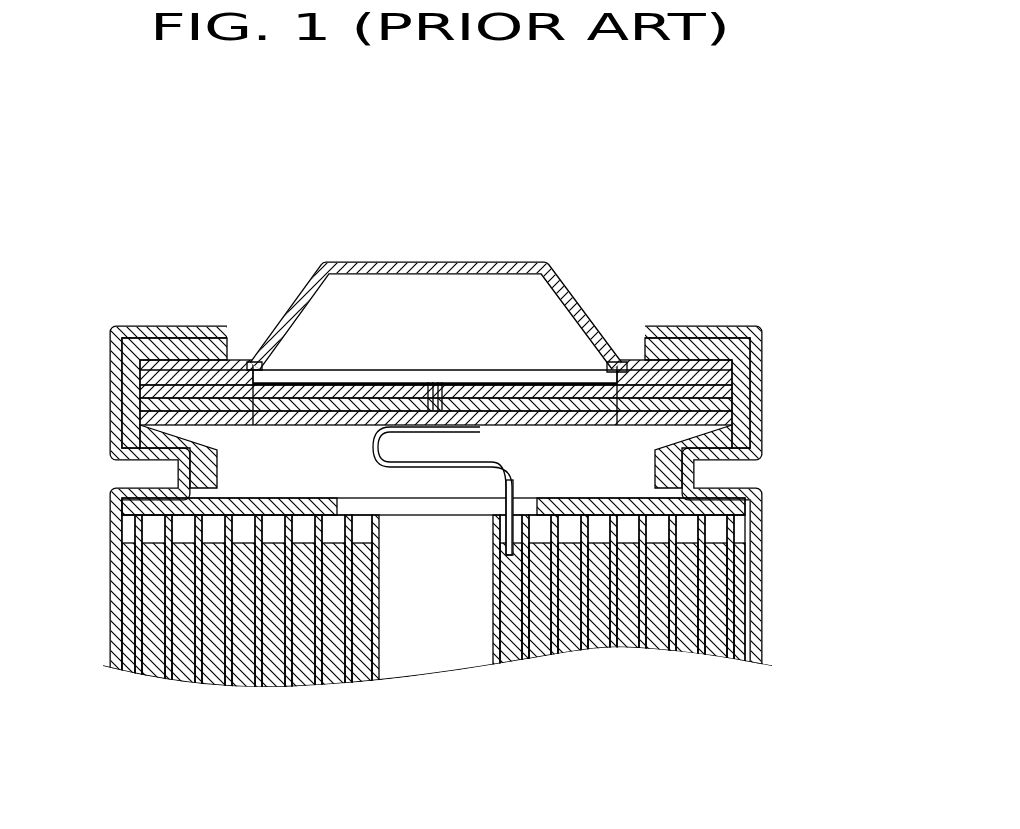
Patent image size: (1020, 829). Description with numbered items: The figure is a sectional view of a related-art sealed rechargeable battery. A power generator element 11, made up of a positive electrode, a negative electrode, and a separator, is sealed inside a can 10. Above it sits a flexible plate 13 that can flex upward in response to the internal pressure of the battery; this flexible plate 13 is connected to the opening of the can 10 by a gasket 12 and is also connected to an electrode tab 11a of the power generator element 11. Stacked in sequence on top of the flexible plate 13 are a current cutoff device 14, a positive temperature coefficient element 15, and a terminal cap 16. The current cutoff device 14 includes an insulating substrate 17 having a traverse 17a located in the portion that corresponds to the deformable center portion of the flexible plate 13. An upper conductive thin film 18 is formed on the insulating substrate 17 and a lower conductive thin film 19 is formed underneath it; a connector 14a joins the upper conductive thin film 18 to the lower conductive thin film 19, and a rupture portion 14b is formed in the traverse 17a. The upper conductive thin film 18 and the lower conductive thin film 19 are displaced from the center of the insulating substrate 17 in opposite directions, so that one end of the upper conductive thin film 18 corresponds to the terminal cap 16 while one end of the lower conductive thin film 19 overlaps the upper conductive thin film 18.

The can 10 is at (757, 555).
The power generator element 11 is at (230, 722).
The electrode tab 11a is at (436, 468).
The gasket 12 is at (737, 382).
The flexible plate 13 is at (150, 425).
The current cutoff device 14 is at (460, 366).
The connector 14a is at (444, 382).
The rupture portion 14b is at (455, 370).
The positive temperature coefficient (PTC) element 15 is at (197, 375).
The terminal cap 16 is at (380, 262).
The insulating substrate 17 is at (150, 398).
The traverse 17a is at (338, 384).
The upper conductive thin film 18 is at (294, 398).
The lower conductive thin film 19 is at (615, 428).